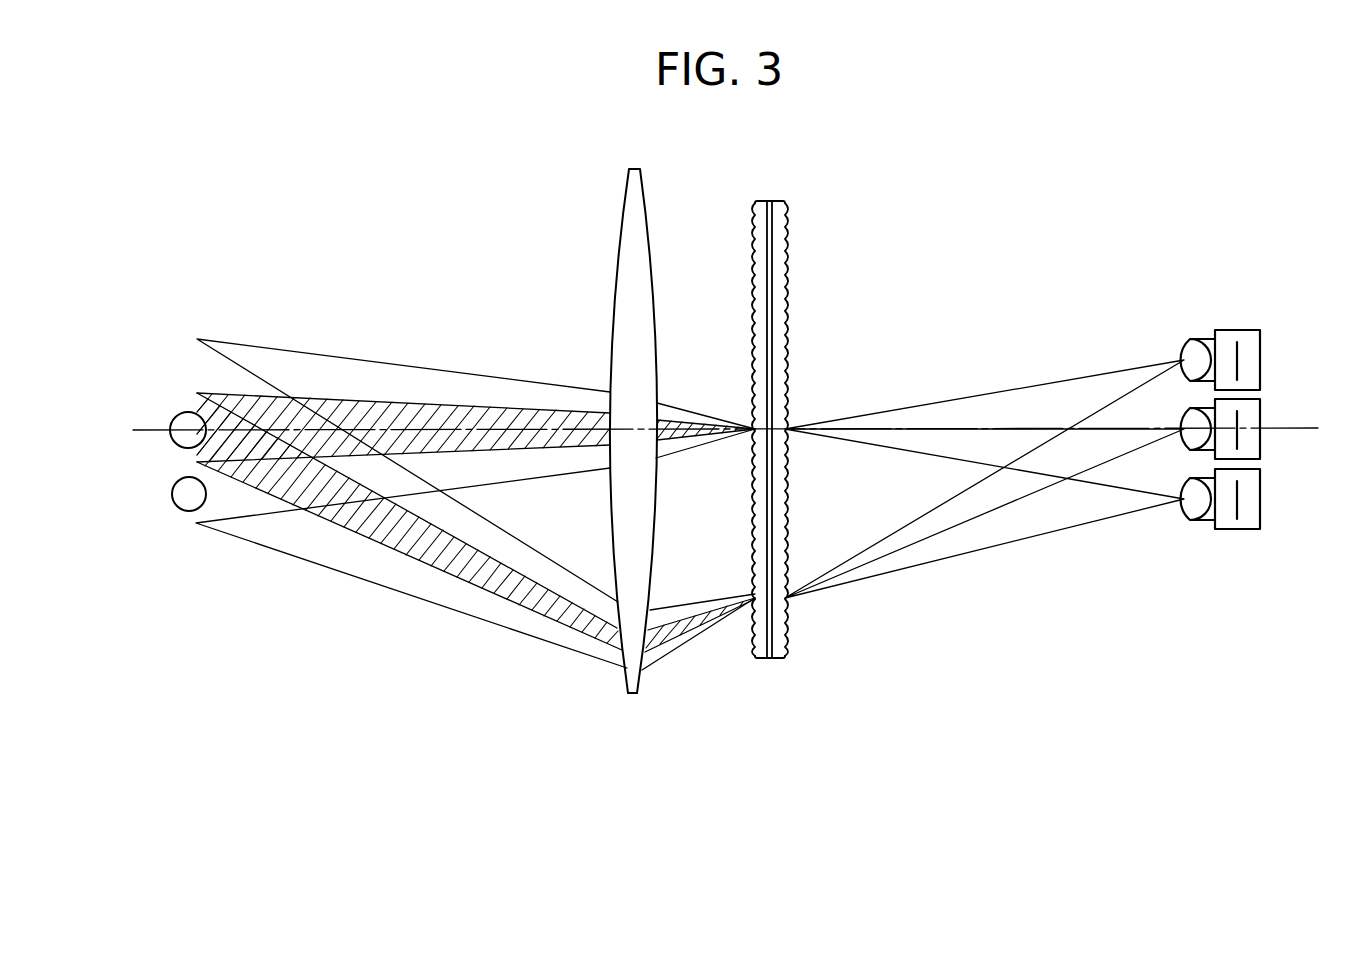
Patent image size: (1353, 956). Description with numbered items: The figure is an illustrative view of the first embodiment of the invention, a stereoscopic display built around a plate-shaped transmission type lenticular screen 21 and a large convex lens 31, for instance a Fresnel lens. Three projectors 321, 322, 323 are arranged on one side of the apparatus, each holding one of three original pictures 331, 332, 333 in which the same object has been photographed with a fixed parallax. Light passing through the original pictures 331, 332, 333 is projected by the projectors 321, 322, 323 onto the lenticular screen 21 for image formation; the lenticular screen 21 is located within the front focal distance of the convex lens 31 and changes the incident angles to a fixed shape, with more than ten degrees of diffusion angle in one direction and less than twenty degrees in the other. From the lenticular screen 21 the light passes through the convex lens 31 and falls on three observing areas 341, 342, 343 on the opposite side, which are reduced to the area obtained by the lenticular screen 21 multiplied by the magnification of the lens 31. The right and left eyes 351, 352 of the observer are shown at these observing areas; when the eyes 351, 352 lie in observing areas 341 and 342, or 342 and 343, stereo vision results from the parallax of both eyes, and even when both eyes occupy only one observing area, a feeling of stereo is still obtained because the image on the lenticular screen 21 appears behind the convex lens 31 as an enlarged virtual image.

The lenticular screen 21 is at (770, 400).
The convex lens 31 is at (632, 187).
The projector 321 is at (1262, 501).
The projector 322 is at (1261, 426).
The projector 323 is at (1261, 337).
The original picture 331 is at (1242, 510).
The original picture 332 is at (1240, 440).
The original picture 333 is at (1233, 350).
The observing area 341 is at (215, 363).
The observing area 342 is at (210, 417).
The observing area 343 is at (200, 468).
The right eye of the observer 351 is at (170, 426).
The left eye of the observer 352 is at (180, 502).